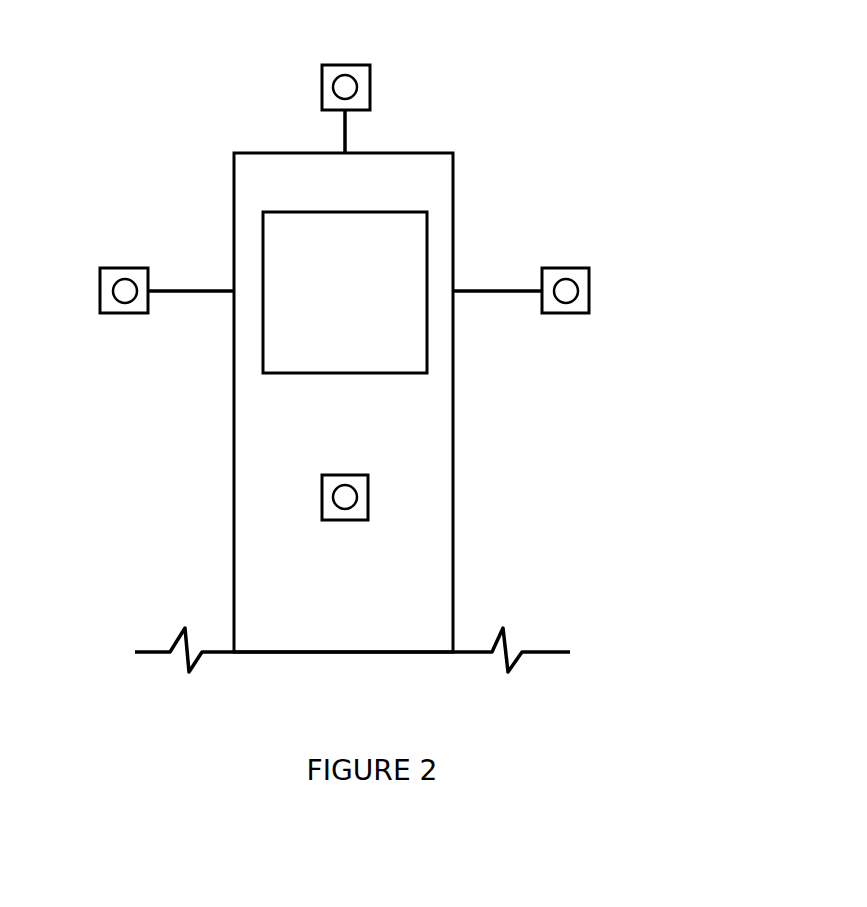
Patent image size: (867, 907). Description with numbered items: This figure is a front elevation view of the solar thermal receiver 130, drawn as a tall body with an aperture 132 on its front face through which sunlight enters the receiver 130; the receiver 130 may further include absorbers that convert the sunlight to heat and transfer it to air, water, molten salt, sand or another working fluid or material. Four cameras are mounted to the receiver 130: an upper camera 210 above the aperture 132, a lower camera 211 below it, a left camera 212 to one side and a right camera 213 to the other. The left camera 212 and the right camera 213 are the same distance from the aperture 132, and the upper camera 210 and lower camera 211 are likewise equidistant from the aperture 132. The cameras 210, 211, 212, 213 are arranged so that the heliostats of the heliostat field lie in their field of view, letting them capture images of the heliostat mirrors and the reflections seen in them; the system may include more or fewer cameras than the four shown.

The solar thermal receiver 130 is at (463, 426).
The aperture 132 is at (322, 305).
The upper camera 210 is at (373, 80).
The lower camera 211 is at (322, 520).
The left camera 212 is at (123, 318).
The right camera 213 is at (590, 294).